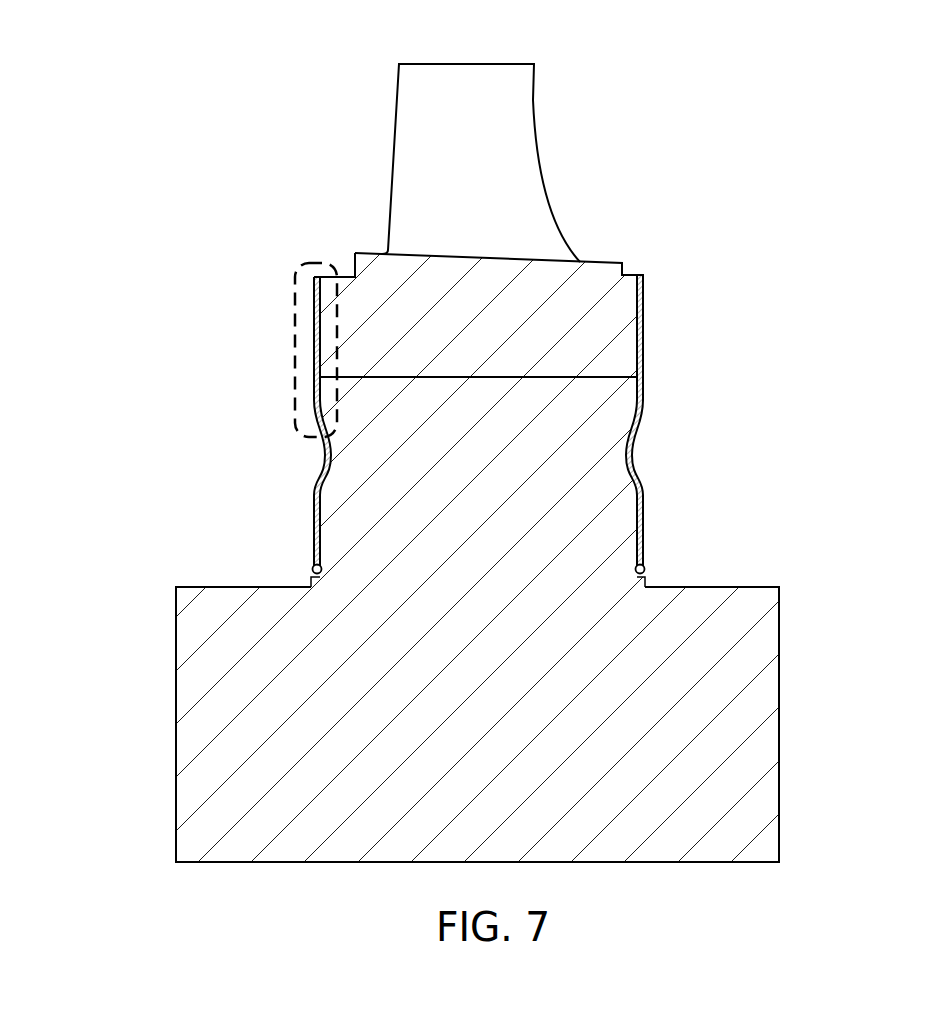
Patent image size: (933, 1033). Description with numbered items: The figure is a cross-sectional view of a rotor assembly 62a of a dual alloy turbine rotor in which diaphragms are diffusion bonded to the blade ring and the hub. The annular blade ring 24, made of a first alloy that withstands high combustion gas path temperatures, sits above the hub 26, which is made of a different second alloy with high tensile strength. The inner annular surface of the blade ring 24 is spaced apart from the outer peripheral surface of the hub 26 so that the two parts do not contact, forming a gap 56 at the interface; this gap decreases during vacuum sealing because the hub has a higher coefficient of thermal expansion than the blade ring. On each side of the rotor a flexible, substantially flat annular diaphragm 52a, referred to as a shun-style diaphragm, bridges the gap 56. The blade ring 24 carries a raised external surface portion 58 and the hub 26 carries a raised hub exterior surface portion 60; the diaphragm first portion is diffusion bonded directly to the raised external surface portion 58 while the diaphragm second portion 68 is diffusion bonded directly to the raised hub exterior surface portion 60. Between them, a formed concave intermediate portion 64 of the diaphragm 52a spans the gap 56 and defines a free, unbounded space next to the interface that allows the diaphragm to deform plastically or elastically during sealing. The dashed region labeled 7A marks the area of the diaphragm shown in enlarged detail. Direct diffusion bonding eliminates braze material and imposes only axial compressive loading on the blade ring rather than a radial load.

The annular blade ring 24 is at (588, 177).
The rotor assembly 62a is at (734, 235).
The hub 26 is at (800, 737).
The gap 56 is at (620, 375).
The raised external surface portion 58 is at (318, 278).
The diaphragm 52a is at (313, 300).
The intermediate portion 64 is at (327, 450).
The diaphragm second portion 68 is at (313, 528).
The raised hub exterior surface portion 60 is at (312, 573).
The detail region 7A is at (295, 350).